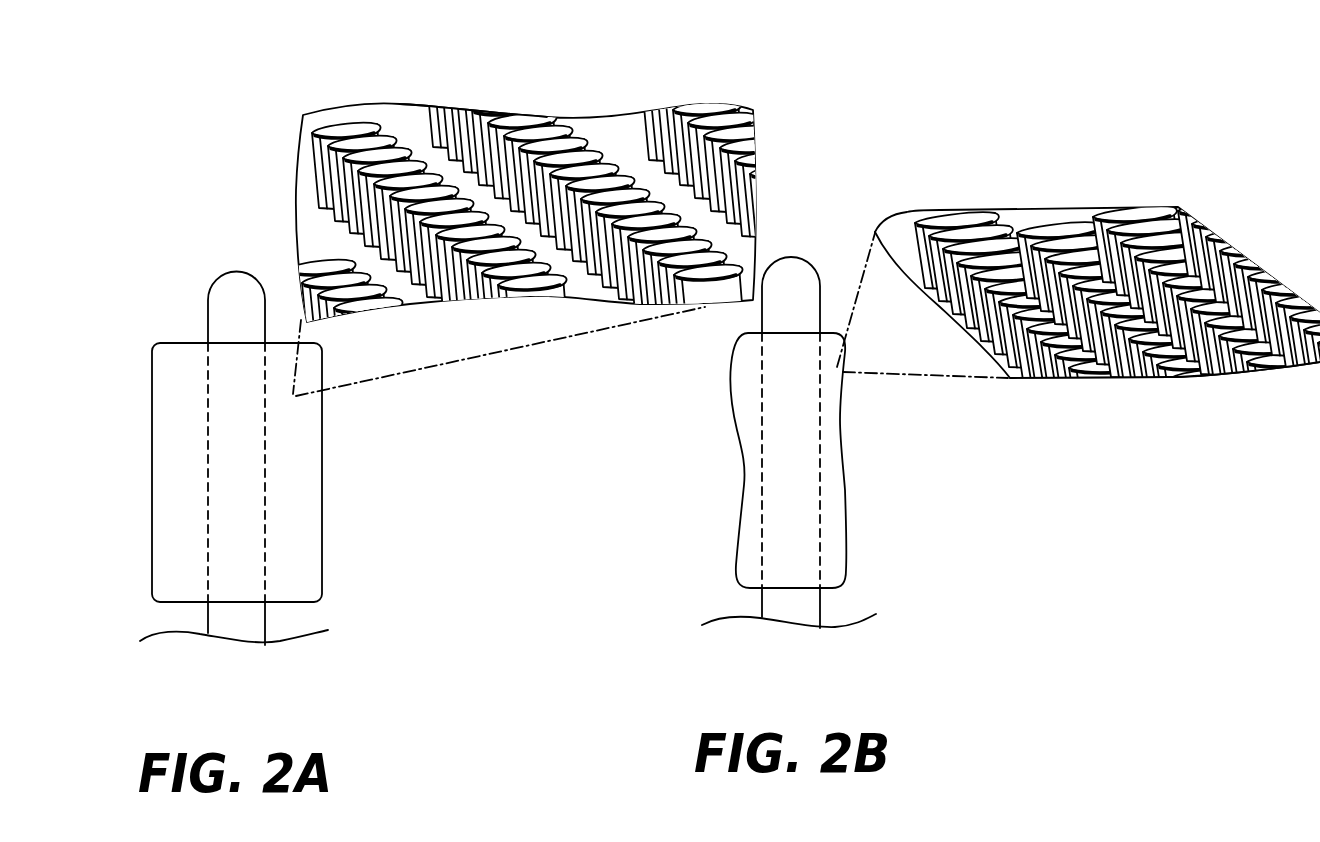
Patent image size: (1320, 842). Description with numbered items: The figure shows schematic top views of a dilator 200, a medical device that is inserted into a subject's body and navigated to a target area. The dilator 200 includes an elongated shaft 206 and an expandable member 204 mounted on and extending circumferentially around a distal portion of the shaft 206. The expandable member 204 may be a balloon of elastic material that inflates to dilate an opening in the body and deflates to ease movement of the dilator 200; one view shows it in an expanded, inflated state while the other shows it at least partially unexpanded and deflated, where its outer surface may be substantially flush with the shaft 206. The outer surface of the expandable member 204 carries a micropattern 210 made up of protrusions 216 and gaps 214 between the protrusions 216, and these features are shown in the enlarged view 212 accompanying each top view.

In FIG. 2A, the dilator 200 is at (158, 313).
In FIG. 2B, the dilator 200 is at (704, 411).
In FIG. 2A, the expandable member 204 is at (322, 498).
In FIG. 2B, the expandable member 204 is at (846, 527).
In FIG. 2A, the elongated shaft 206 is at (247, 624).
In FIG. 2B, the elongated shaft 206 is at (808, 607).
In FIG. 2A, the micropattern 210 is at (562, 216).
In FIG. 2B, the micropattern 210 is at (1117, 295).
In FIG. 2A, the enlarged view 212 is at (310, 163).
In FIG. 2B, the enlarged view 212 is at (950, 208).
In FIG. 2A, the gaps 214 is at (417, 142).
In FIG. 2B, the gaps 214 is at (1170, 377).
In FIG. 2A, the protrusions 216 is at (598, 140).
In FIG. 2B, the protrusions 216 is at (1060, 228).